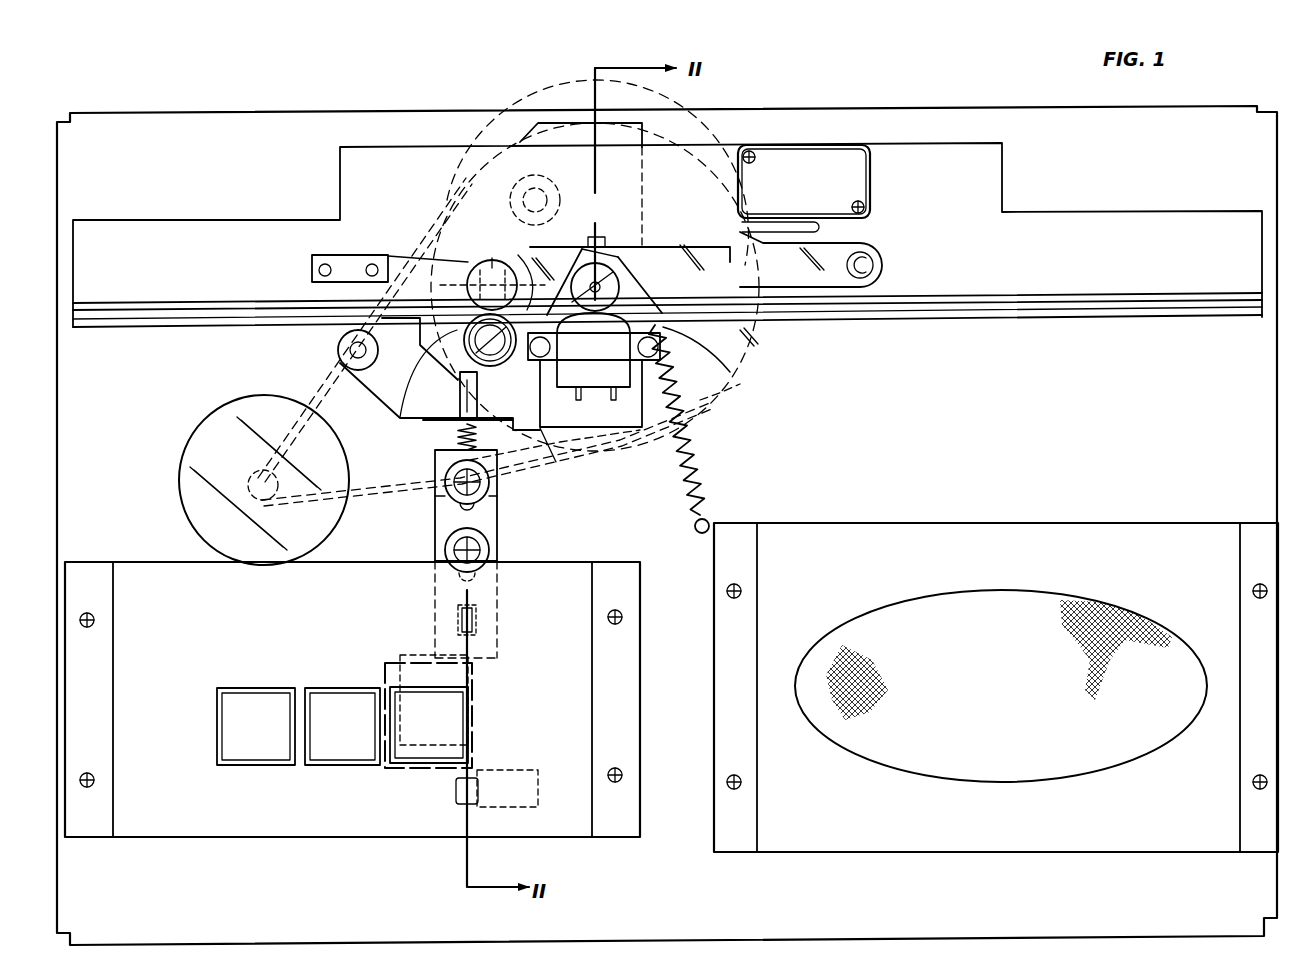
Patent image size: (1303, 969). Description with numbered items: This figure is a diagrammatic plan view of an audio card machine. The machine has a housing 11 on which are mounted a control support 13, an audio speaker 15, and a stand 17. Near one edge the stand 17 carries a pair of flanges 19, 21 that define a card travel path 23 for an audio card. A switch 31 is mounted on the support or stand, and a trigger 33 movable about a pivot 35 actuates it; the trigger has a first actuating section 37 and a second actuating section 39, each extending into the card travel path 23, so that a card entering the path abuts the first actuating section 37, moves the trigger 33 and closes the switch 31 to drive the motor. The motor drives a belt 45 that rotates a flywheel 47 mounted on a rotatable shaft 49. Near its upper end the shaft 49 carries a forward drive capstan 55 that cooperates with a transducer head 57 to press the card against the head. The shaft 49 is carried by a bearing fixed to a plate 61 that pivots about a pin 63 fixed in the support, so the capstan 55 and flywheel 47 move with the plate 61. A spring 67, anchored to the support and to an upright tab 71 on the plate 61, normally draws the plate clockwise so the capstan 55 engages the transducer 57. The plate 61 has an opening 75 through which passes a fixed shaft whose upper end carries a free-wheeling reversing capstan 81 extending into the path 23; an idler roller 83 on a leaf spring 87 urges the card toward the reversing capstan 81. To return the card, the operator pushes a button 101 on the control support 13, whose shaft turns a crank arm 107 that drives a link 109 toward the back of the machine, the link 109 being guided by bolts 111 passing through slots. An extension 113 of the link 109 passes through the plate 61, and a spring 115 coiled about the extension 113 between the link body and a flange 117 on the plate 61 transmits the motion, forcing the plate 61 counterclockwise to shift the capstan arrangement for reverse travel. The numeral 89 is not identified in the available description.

The housing 11 is at (1240, 398).
The control support 13 is at (560, 575).
The audio speaker 15 is at (844, 524).
The stand 17 is at (1100, 218).
The flange 19 is at (224, 292).
The flange 21 is at (170, 328).
The card travel path 23 is at (922, 312).
The switch 31 is at (812, 165).
The trigger 33 is at (832, 252).
The pivot 35 is at (876, 264).
The first actuating section 37 is at (752, 341).
The second actuating section 39 is at (522, 264).
The belt 45 is at (598, 455).
The flywheel 47 is at (735, 413).
The rotatable shaft 49 is at (605, 268).
The forward drive capstan 55 is at (603, 262).
The transducer head 57 is at (590, 388).
The plate 61 is at (368, 385).
The pin 63 is at (345, 350).
The spring 67 is at (698, 452).
The upright tab 71 is at (733, 374).
The opening 75 is at (452, 382).
The reversing capstan 81 is at (465, 350).
The idler roller 83 is at (491, 262).
The leaf spring 87 is at (402, 255).
The tape spool 89 is at (688, 140).
The button 101 is at (465, 722).
The crank arm 107 is at (480, 672).
The link 109 is at (432, 526).
The bolts 111 is at (486, 545).
The extension 113 is at (456, 428).
The spring 115 is at (438, 496).
The flange 117 is at (525, 432).